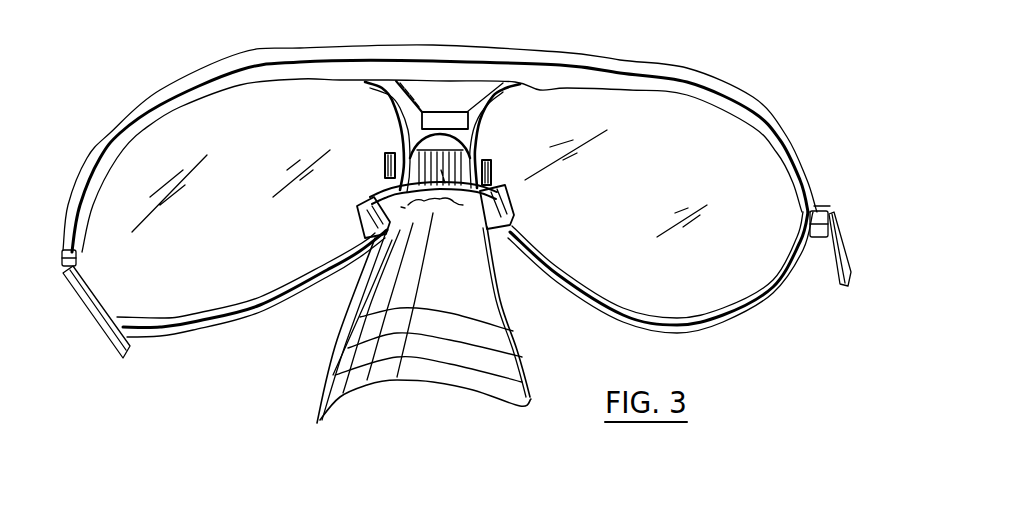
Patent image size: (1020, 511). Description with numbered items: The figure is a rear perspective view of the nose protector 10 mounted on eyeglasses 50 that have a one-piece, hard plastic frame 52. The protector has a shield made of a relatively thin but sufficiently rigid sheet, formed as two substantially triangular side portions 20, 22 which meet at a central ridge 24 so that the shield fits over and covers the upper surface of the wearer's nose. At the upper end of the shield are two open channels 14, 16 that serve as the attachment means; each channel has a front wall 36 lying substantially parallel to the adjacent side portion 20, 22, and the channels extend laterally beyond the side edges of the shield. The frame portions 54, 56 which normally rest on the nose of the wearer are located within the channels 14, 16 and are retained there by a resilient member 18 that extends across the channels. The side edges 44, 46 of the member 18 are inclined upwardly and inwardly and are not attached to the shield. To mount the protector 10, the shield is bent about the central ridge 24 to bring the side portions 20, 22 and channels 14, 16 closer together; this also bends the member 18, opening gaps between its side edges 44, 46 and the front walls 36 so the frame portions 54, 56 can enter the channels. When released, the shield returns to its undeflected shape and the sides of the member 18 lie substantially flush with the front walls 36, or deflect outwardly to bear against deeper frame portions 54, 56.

The nose protector 10 is at (290, 404).
The open channel 14 is at (368, 207).
The open channel 16 is at (510, 193).
The resilient member 18 is at (491, 153).
The side portion 20 is at (318, 425).
The side portion 22 is at (518, 402).
The central ridge 24 is at (409, 384).
The front wall 36 is at (358, 214).
The side edge 44 is at (388, 152).
The side edge 46 is at (490, 176).
The eyeglasses 50 is at (638, 52).
The frame 52 is at (752, 98).
The frame portion 54 is at (403, 137).
The frame portion 56 is at (512, 231).